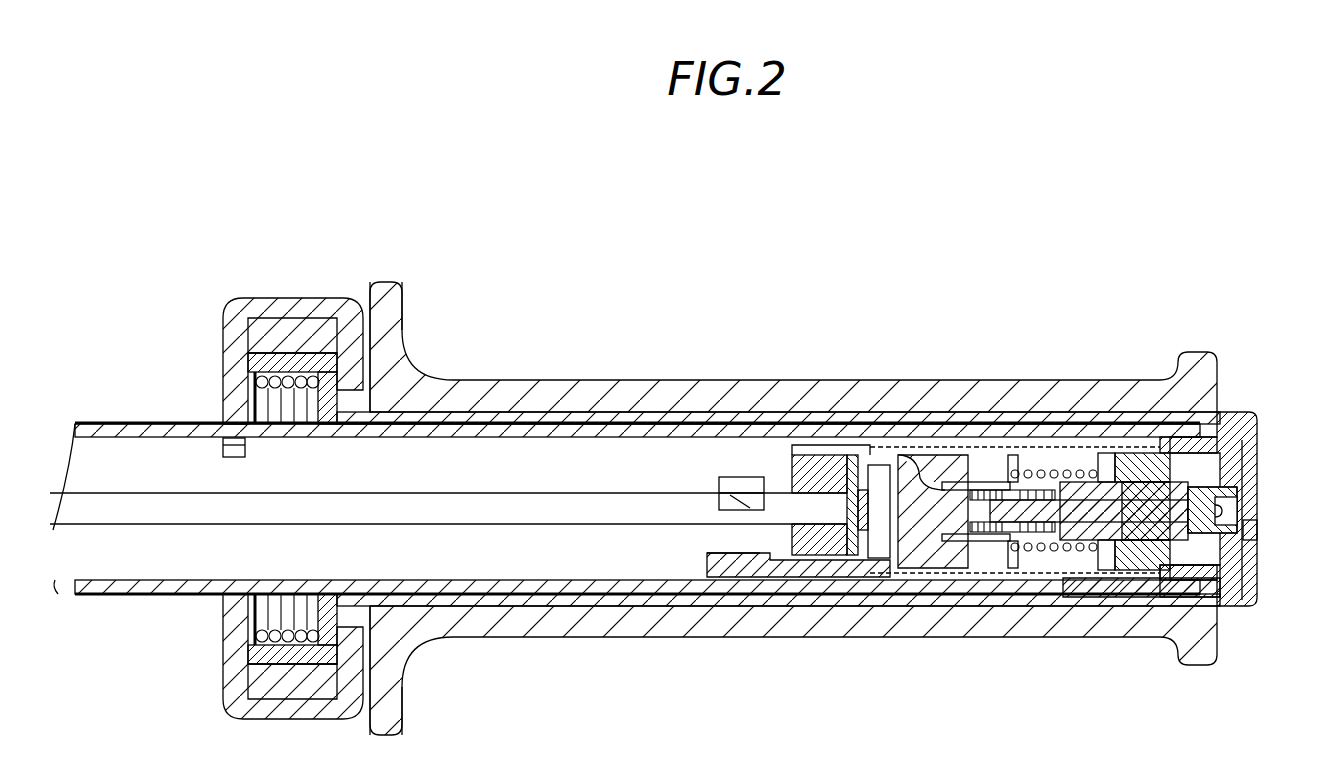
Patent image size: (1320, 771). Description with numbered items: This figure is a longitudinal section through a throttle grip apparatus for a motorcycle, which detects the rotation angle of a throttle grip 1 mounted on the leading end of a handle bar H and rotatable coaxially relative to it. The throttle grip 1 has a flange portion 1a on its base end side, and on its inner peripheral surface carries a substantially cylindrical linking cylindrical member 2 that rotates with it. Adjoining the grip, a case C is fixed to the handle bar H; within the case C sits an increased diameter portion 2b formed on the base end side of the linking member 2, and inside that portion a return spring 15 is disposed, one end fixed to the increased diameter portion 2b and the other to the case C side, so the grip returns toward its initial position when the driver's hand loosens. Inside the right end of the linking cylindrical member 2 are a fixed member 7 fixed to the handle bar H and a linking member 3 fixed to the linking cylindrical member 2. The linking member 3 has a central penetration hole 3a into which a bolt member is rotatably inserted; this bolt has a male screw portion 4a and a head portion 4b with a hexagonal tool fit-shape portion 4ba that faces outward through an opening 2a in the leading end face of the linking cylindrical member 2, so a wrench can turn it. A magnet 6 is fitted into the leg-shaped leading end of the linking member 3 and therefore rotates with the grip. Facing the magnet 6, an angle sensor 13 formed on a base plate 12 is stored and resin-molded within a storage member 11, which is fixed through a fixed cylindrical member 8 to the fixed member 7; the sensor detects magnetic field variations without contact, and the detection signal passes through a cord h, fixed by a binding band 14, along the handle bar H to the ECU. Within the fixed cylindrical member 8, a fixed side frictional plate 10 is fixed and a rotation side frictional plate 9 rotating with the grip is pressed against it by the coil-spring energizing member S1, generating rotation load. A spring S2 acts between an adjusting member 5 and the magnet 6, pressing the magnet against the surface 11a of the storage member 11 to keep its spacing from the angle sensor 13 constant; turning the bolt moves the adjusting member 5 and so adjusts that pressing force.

The throttle grip 1 is at (555, 380).
The flange portion 1a is at (392, 282).
The linking cylindrical member 2 is at (606, 418).
The opening 2a is at (1255, 530).
The increased diameter portion 2b is at (278, 368).
The linking member 3 is at (1240, 448).
The penetration hole 3a is at (1112, 453).
The male screw portion 4a is at (1040, 570).
The head portion 4b is at (1235, 493).
The tool fit-shape portion 4ba is at (1232, 515).
The adjusting member 5 is at (1012, 568).
The magnet 6 is at (935, 455).
The fixed member 7 is at (1230, 583).
The fixed cylindrical member 8 is at (895, 577).
The rotation side frictional plate 9 is at (1095, 540).
The fixed side frictional plate 10 is at (1130, 540).
The storage member 11 is at (800, 460).
The surface of the storage member 11a is at (893, 465).
The base plate 12 is at (864, 490).
The angle sensor 13 is at (852, 555).
The binding band 14 is at (740, 478).
The return spring 15 is at (262, 621).
The case C is at (223, 352).
The handle bar H is at (110, 424).
The cord h is at (155, 490).
The energizing member S1 is at (1048, 490).
The spring S2 is at (1000, 470).